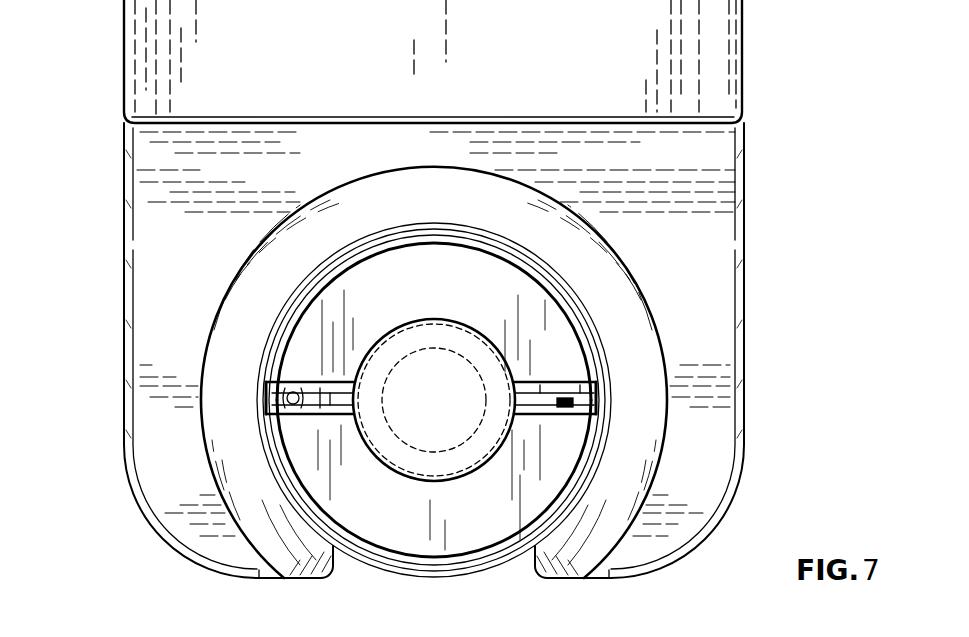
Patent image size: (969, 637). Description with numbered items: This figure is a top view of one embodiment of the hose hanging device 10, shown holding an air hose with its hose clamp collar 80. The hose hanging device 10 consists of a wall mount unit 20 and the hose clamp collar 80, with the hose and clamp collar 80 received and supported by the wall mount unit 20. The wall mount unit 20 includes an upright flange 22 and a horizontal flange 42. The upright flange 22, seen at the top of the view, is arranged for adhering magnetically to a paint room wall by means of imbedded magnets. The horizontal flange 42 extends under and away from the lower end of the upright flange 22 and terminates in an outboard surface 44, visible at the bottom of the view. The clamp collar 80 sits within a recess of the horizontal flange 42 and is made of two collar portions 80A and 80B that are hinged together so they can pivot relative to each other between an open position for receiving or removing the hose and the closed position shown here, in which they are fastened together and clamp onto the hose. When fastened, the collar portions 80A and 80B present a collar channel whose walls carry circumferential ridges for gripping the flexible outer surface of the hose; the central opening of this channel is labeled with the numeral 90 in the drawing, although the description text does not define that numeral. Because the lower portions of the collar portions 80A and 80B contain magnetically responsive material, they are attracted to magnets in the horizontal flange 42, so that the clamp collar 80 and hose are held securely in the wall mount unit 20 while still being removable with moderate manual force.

The hose hanging device 10 is at (198, 588).
The wall mount unit 20 is at (114, 378).
The upright flange 22 is at (330, 41).
The horizontal flange 42 is at (196, 306).
The outboard surface 44 is at (604, 582).
The hose clamp collar 80 is at (376, 586).
The collar portion 80A is at (470, 300).
The collar portion 80B is at (512, 518).
The central aperture 90 is at (459, 478).